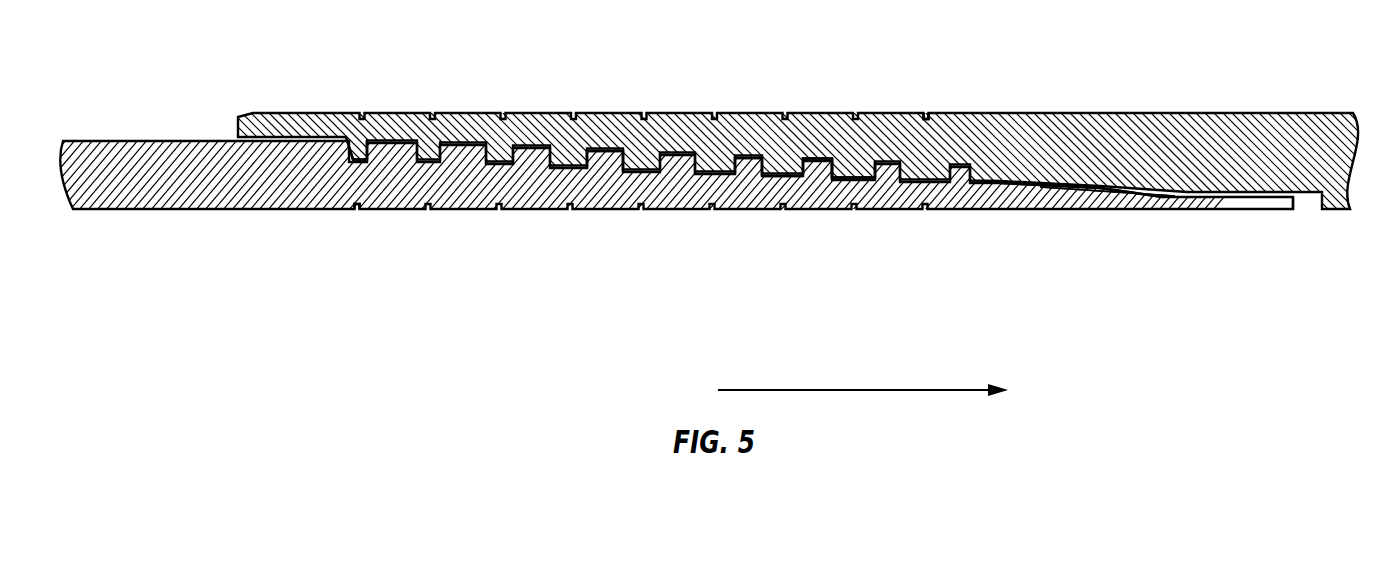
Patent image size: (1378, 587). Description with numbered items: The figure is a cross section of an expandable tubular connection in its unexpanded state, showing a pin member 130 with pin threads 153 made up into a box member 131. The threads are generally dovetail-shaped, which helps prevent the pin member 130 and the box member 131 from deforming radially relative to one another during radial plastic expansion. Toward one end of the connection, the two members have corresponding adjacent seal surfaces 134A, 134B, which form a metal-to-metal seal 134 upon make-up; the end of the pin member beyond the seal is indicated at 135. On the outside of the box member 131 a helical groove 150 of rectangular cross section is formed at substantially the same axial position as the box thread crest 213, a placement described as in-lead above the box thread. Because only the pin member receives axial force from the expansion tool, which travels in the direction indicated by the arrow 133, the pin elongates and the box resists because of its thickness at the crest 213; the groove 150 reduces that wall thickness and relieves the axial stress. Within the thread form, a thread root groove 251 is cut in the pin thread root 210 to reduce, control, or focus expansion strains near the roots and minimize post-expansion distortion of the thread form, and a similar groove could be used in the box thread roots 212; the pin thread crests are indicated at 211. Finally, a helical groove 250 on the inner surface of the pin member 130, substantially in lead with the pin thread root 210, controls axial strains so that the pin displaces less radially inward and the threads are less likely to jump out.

The pin member 130 is at (162, 188).
The box member 131 is at (1304, 164).
The expansion tool travel direction 133 is at (887, 391).
The metal-to-metal seal 134 is at (1118, 188).
The seal surface 134A is at (1072, 187).
The seal surface 134B is at (1090, 188).
The end of first member 135 is at (1285, 210).
The helical groove 150 is at (932, 112).
The pin threads 153 is at (605, 165).
The pin thread root 210 is at (794, 181).
The tooth 211 is at (748, 157).
The box thread root 212 is at (820, 160).
The box thread crest 213 is at (863, 175).
The helical groove 250 is at (358, 211).
The thread root groove 251 is at (354, 164).